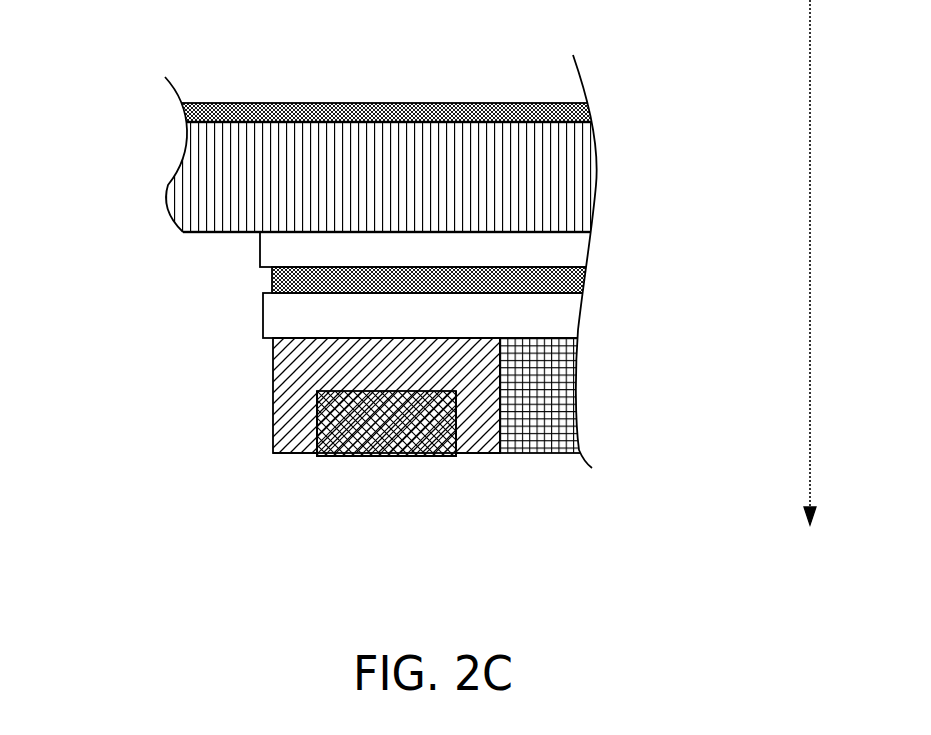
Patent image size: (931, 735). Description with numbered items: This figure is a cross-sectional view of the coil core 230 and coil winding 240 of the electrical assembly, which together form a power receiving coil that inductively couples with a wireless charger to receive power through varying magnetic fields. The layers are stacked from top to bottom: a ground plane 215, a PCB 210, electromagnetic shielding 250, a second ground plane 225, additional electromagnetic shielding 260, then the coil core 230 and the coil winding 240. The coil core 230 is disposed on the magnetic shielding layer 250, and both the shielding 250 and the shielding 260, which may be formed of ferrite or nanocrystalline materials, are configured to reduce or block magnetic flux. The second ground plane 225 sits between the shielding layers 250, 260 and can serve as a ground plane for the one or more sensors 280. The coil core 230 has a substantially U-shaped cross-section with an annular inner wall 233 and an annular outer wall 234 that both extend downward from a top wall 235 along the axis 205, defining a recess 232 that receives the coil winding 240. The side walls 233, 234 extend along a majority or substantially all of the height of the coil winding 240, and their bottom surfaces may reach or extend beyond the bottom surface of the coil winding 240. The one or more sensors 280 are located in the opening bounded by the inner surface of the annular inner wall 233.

The axis 205 is at (810, 272).
The PCB 210 is at (188, 172).
The ground plane 215 is at (215, 112).
The second ground plane 225 is at (278, 274).
The coil core 230 is at (273, 404).
The recess 232 is at (318, 433).
The annular inner wall 233 is at (478, 435).
The annular outer wall 234 is at (292, 420).
The top wall 235 is at (362, 358).
The coil winding 240 is at (363, 445).
The electromagnetic shielding 250 is at (275, 250).
The additional electromagnetic shielding 260 is at (283, 315).
The sensors 280 is at (570, 452).